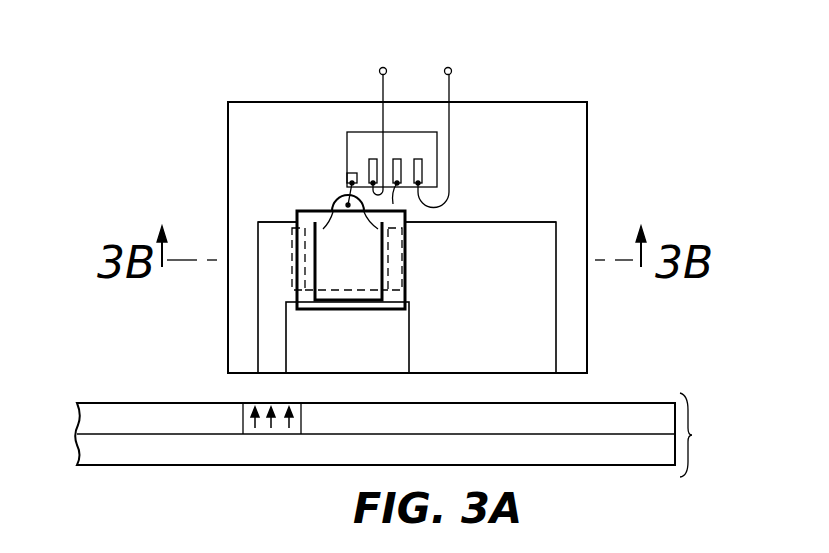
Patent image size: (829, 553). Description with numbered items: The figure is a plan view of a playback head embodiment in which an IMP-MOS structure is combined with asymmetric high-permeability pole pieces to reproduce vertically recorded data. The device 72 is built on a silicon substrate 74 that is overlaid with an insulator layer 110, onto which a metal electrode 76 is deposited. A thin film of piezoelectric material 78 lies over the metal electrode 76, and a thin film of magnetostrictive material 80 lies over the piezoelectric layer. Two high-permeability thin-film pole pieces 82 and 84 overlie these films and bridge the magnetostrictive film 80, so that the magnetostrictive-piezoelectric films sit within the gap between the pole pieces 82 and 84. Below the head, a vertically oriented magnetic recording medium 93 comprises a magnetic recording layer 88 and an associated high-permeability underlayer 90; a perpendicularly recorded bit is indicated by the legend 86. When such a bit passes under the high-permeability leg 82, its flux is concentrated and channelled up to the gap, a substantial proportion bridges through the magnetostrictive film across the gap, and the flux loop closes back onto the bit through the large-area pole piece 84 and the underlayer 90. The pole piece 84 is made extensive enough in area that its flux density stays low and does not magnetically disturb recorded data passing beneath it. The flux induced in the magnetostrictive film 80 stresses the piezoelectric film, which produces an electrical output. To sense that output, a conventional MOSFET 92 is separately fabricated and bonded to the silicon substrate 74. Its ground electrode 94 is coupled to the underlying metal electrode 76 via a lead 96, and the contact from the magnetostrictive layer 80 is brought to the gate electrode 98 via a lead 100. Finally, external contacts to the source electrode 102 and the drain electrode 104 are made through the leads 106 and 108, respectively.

The device 72 is at (223, 97).
The silicon substrate 74 is at (587, 355).
The metal electrode 76 is at (346, 202).
The piezoelectric material 78 is at (298, 211).
The magnetostrictive material 80 is at (360, 272).
The pole piece 82 is at (265, 295).
The pole piece 84 is at (508, 230).
The perpendicularly recorded bit 86 is at (247, 403).
The magnetic recording layer 88 is at (97, 410).
The high-permeability underlayer 90 is at (100, 457).
The MOSFET 92 is at (348, 137).
The vertically oriented magnetic recording medium 93 is at (604, 475).
The ground electrode 94 is at (346, 177).
The lead 96 is at (347, 183).
The gate electrode 98 is at (397, 159).
The lead 100 is at (393, 204).
The source electrode 102 is at (370, 159).
The drain electrode 104 is at (422, 168).
The lead 106 is at (380, 79).
The lead 108 is at (452, 85).
The insulator layer 110 is at (577, 140).